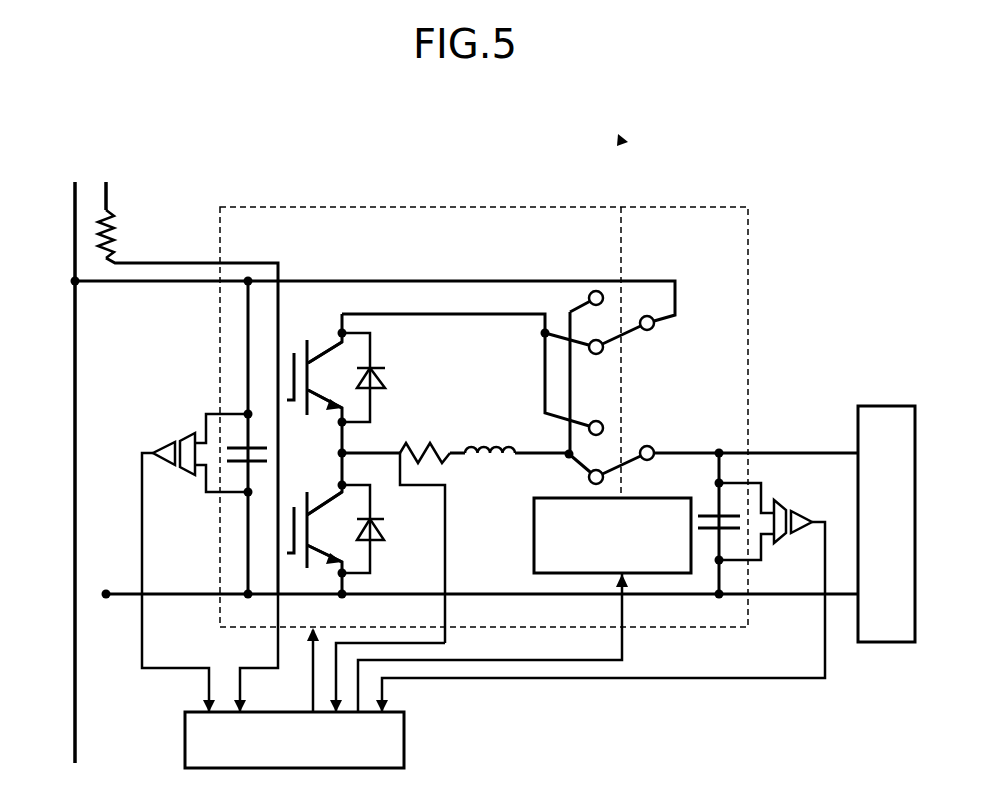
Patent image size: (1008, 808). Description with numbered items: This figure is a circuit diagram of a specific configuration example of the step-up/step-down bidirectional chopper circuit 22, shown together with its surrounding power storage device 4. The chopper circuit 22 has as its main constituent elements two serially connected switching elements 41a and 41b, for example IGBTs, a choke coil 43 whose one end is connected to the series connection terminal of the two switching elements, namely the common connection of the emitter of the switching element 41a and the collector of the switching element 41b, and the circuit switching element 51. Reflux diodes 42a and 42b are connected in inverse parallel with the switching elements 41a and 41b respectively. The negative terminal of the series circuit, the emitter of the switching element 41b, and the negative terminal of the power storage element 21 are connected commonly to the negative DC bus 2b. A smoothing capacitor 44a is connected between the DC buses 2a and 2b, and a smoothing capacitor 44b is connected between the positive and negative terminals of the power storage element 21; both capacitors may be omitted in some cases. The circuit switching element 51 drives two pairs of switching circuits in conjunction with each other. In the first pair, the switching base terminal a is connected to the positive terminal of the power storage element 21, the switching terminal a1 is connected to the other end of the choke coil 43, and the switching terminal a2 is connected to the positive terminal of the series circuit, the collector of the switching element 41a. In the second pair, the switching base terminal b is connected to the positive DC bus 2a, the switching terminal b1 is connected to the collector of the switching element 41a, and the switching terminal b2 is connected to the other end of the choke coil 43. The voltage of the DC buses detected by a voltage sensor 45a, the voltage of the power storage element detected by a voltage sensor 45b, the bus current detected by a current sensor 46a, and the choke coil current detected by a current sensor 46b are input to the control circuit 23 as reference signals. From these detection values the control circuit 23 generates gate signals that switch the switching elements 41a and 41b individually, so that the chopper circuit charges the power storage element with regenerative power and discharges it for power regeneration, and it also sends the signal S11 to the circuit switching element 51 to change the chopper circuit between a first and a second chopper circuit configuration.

The positive DC bus 2a is at (75, 313).
The negative DC bus 2b is at (108, 313).
The power storage device 4 is at (620, 143).
The power storage element 21 is at (882, 406).
The step-up/step-down bidirectional chopper circuit 22 is at (750, 313).
The control circuit 23 is at (406, 742).
The switching element 41a is at (290, 375).
The switching element 41b is at (290, 533).
The reflux diode 42a is at (385, 378).
The reflux diode 42b is at (373, 542).
The choke coil 43 is at (486, 443).
The smoothing capacitor 44a is at (235, 446).
The smoothing capacitor 44b is at (703, 505).
The voltage sensor 45a is at (166, 446).
The voltage sensor 45b is at (800, 510).
The current sensor 46a is at (118, 235).
The current sensor 46b is at (419, 444).
The circuit switching element 51 is at (534, 532).
The switching signal S11 is at (490, 643).
The switching base terminal a is at (645, 446).
The switching terminal a1 is at (588, 476).
The switching terminal a2 is at (591, 421).
The switching base terminal b is at (647, 316).
The switching terminal b1 is at (604, 348).
The switching terminal b2 is at (596, 290).